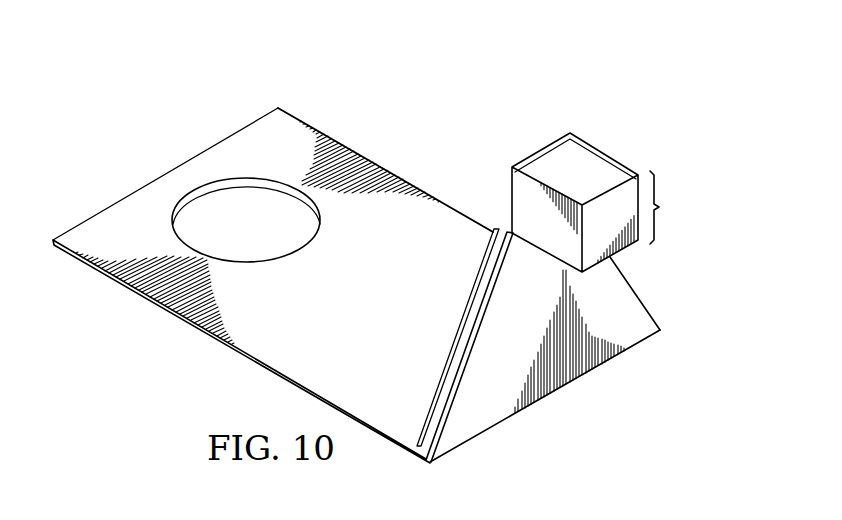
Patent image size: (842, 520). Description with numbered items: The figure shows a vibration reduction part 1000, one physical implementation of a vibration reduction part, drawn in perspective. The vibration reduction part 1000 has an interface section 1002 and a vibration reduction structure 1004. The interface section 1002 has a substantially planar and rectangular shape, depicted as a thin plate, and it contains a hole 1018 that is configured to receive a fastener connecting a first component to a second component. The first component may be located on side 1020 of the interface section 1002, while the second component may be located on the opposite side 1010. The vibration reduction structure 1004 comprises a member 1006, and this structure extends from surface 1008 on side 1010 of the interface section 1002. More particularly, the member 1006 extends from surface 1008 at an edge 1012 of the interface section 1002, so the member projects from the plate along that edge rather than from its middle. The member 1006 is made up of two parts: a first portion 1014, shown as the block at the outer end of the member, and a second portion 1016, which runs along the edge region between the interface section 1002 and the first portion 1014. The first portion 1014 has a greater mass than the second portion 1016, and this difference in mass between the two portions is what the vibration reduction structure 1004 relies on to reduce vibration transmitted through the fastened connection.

The vibration reduction part 1000 is at (522, 59).
The interface section 1002 is at (334, 130).
The vibration reduction structure 1004 is at (675, 288).
The member 1006 is at (637, 332).
The surface 1008 is at (105, 221).
The side 1010 is at (263, 346).
The edge 1012 is at (552, 397).
The first portion 1014 is at (685, 207).
The second portion 1016 is at (456, 342).
The hole 1018 is at (313, 239).
The side 1020 is at (423, 190).